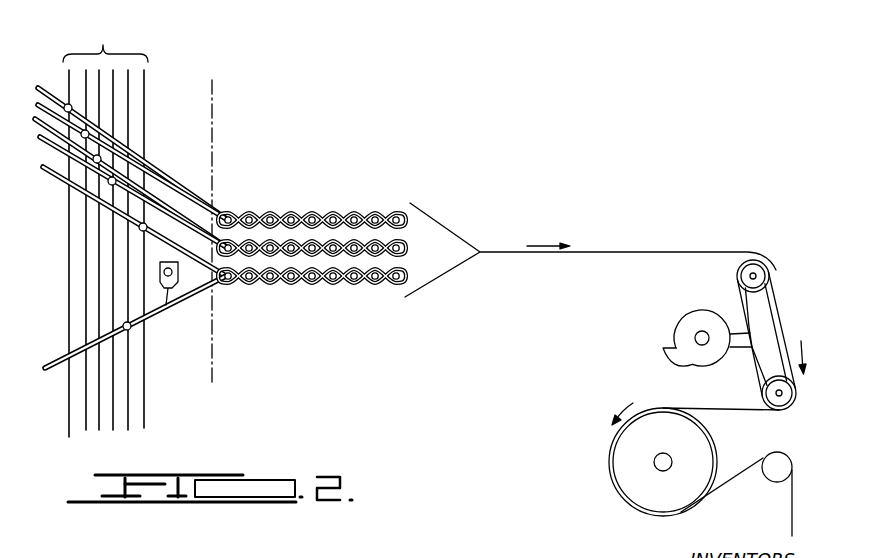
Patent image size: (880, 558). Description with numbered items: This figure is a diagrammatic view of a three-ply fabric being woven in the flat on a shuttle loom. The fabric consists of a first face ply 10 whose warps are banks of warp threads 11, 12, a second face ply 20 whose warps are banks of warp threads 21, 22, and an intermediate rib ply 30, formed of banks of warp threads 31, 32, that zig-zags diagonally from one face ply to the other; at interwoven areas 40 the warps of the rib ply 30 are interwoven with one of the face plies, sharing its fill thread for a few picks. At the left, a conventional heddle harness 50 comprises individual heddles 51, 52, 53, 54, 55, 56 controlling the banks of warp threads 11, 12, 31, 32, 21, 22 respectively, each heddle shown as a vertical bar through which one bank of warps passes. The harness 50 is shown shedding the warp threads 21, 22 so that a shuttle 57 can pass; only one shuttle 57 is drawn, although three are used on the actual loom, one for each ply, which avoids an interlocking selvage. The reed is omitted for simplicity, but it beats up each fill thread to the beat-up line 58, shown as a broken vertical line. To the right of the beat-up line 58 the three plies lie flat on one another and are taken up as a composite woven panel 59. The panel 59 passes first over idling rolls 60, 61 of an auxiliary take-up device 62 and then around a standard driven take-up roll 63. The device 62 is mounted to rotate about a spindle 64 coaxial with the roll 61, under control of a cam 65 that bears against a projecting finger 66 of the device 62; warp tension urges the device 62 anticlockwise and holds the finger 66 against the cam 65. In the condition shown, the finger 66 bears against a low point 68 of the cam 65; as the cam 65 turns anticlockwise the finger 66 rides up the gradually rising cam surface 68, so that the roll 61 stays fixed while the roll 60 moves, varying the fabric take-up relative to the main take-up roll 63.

The first face ply 10 is at (399, 213).
The warp threads 11 is at (53, 92).
The warp threads 12 is at (172, 147).
The second face ply 20 is at (404, 287).
The warp threads 21 is at (50, 358).
The warp threads 22 is at (128, 221).
The rib ply 30 is at (408, 246).
The warp threads 31 is at (190, 176).
The warp threads 32 is at (36, 158).
The interwoven areas 40 is at (345, 204).
The heddle harness 50 is at (105, 39).
The heddle 51 is at (69, 236).
The heddle 52 is at (86, 253).
The heddle 53 is at (99, 268).
The heddle 54 is at (113, 289).
The heddle 55 is at (128, 359).
The heddle 56 is at (144, 379).
The shuttle 57 is at (166, 306).
The beat-up line 58 is at (213, 127).
The composite woven panel 59 is at (652, 253).
The idling roll 60 is at (788, 246).
The idling roll 61 is at (761, 388).
The auxiliary take-up device 62 is at (763, 307).
The take-up roll 63 is at (635, 452).
The spindle 64 is at (765, 411).
The cam 65 is at (687, 337).
The projecting finger 66 is at (749, 337).
The low point 68 is at (731, 363).